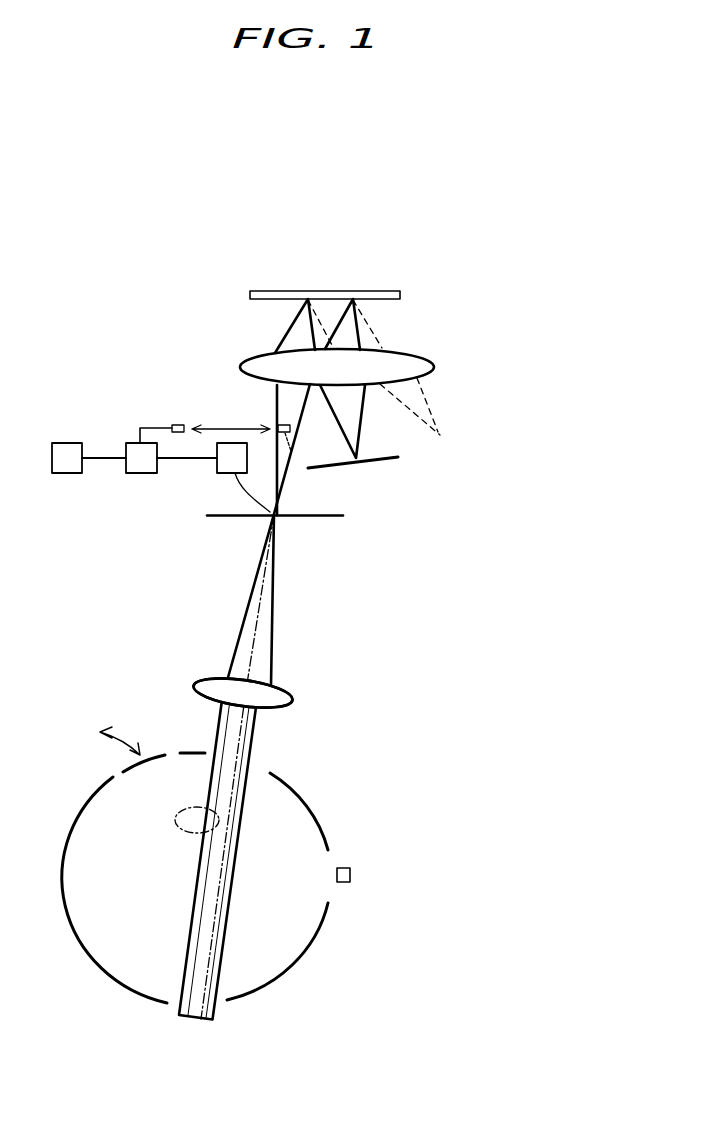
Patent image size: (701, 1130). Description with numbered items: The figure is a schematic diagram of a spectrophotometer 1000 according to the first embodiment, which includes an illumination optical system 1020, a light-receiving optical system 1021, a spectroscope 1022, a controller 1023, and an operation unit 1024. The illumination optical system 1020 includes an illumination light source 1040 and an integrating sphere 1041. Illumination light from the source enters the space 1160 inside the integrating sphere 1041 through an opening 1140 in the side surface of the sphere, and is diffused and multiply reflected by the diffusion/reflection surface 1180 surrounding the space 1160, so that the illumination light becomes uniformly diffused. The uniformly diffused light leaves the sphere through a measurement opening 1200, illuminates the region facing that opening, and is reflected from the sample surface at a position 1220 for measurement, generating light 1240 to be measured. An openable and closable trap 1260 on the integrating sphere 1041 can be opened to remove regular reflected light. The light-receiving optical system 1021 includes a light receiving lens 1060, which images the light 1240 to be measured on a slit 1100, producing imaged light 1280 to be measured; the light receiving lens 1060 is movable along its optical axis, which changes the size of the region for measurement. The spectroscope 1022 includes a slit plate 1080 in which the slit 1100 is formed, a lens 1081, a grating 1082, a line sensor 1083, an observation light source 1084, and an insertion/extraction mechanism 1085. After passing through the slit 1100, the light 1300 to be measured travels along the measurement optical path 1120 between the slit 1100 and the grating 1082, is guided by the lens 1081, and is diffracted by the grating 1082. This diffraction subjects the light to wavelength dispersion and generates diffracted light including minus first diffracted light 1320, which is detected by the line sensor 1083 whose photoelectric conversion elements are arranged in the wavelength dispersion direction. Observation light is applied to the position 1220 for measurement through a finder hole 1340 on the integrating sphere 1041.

The spectrophotometer 1000 is at (497, 178).
The illumination optical system 1020 is at (448, 862).
The light-receiving optical system 1021 is at (297, 700).
The light receiving lens 1060 is at (243, 693).
The spectroscope 1022 is at (562, 275).
The controller 1023 is at (140, 473).
The operation unit 1024 is at (66, 443).
The illumination light source 1040 is at (353, 876).
The integrating sphere 1041 is at (322, 932).
The slit plate 1080 is at (315, 516).
The lens 1081 is at (436, 368).
The grating 1082 is at (402, 294).
The line sensor 1083 is at (397, 457).
The observation light source 1084 is at (276, 507).
The insertion/extraction mechanism 1085 is at (290, 450).
The slit 1100 is at (270, 520).
The measurement optical path 1120 is at (275, 407).
The opening 1140 is at (323, 863).
The space 1160 is at (83, 932).
The diffusion/reflection surface 1180 is at (75, 822).
The measurement opening 1200 is at (173, 1003).
The position for measurement 1220 is at (217, 992).
The light to be measured 1240 is at (253, 743).
The trap 1260 is at (157, 755).
The imaged light to be measured 1280 is at (273, 538).
The light to be measured 1300 is at (275, 388).
The minus first diffracted light 1320 is at (307, 332).
The finder hole 1340 is at (178, 815).